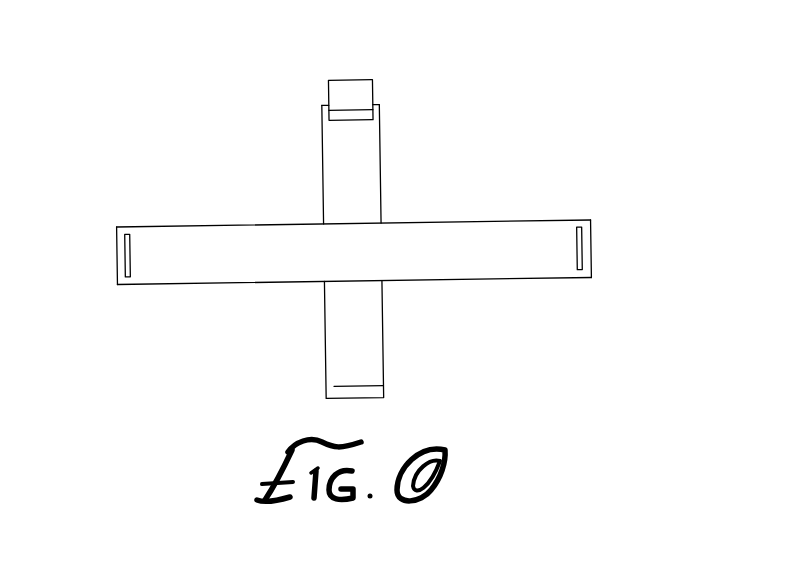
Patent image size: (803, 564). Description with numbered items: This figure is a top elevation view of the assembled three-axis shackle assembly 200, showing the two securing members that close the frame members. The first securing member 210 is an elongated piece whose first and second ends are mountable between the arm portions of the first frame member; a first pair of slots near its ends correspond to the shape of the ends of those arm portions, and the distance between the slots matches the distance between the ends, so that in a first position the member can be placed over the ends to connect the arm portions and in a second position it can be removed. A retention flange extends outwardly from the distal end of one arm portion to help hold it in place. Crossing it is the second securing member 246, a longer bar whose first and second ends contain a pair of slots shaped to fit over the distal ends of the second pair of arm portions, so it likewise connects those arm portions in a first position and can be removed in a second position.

The three-axis shackle assembly 200 is at (480, 94).
The first securing member 210 is at (384, 190).
The second securing member 246 is at (177, 274).